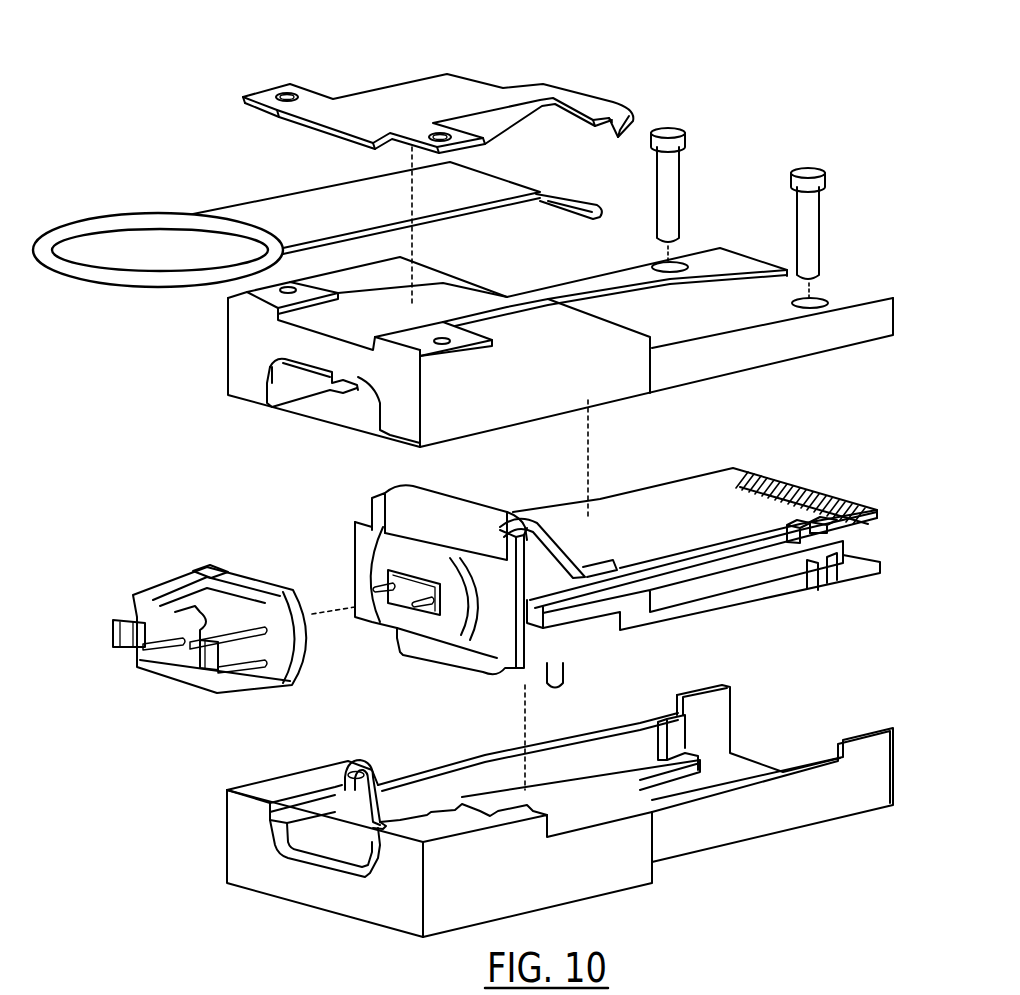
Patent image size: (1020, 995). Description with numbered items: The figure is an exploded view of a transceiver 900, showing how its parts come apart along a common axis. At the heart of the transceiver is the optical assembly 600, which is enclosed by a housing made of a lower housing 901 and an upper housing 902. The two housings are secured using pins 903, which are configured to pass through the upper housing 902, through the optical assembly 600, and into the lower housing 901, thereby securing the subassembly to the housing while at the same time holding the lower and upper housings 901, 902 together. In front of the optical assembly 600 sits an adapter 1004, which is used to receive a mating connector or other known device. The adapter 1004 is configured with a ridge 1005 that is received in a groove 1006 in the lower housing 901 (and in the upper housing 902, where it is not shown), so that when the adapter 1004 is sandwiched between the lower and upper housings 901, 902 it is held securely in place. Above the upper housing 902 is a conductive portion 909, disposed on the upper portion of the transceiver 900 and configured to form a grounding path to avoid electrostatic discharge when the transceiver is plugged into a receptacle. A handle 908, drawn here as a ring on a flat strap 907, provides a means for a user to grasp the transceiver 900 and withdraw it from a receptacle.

The transceiver 900 is at (706, 82).
The lower housing 901 is at (627, 867).
The upper housing 902 is at (883, 318).
The pins 903 is at (808, 170).
The pull tab strap 907 is at (297, 205).
The handle 908 is at (145, 280).
The conductive portion 909 is at (412, 93).
The optical assembly 600 is at (362, 538).
The adapter 1004 is at (180, 683).
The ridge 1005 is at (197, 573).
The groove 1006 is at (343, 774).